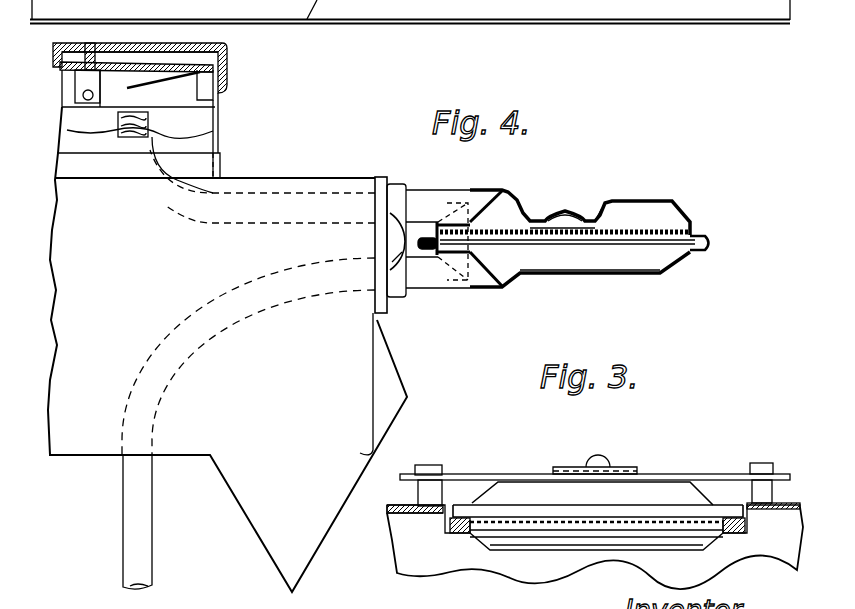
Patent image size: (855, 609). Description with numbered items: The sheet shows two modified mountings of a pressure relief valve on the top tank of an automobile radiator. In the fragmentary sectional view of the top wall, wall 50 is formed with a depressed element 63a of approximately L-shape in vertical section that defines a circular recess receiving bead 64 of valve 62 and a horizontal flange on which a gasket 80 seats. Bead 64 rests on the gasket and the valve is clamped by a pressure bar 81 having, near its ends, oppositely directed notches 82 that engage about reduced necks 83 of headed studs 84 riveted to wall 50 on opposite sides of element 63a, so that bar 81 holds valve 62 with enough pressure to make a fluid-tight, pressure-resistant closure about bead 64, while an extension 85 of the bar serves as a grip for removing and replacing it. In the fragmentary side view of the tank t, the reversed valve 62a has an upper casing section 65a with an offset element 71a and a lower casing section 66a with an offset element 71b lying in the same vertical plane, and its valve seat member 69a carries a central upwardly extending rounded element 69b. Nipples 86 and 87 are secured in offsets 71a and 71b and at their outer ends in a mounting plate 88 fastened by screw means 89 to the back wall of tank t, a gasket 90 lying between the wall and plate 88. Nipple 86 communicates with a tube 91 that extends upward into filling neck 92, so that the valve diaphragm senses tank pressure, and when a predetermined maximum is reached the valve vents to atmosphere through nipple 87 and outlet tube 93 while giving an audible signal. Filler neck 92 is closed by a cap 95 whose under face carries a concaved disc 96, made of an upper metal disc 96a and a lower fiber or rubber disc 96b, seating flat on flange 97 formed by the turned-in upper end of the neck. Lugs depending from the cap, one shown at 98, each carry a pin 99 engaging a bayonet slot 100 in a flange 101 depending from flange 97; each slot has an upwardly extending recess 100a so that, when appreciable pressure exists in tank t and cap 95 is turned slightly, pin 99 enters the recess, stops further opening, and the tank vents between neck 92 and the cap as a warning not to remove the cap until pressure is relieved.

In FIG. 4, the upper radiator tank t is at (560, 10).
In FIG. 3, the upper radiator tank t is at (407, 563).
In FIG. 3, the wall 50 is at (392, 516).
In FIG. 3, the valve 62 is at (664, 487).
In FIG. 4, the valve 62a is at (661, 201).
In FIG. 3, the depressed element 63a is at (746, 523).
In FIG. 3, the bead 64 is at (555, 513).
In FIG. 4, the upper casing section 65a is at (685, 217).
In FIG. 4, the lower casing section 66a is at (634, 276).
In FIG. 4, the valve seat member 69a is at (597, 209).
In FIG. 4, the rounded element 69b is at (563, 212).
In FIG. 4, the offset element 71a is at (489, 190).
In FIG. 4, the offset element 71b is at (502, 290).
In FIG. 3, the gasket 80 is at (460, 527).
In FIG. 3, the pressure bar 81 is at (513, 475).
In FIG. 3, the notches 82 is at (775, 472).
In FIG. 3, the reduced necks 83 is at (428, 474).
In FIG. 3, the headed studs 84 is at (433, 492).
In FIG. 3, the extension 85 is at (594, 468).
In FIG. 4, the nipple 86 is at (440, 200).
In FIG. 4, the nipple 87 is at (449, 275).
In FIG. 4, the mounting plate 88 is at (391, 186).
In FIG. 4, the screw means 89 is at (405, 285).
In FIG. 4, the gasket 90 is at (380, 240).
In FIG. 4, the tube 91 is at (300, 192).
In FIG. 4, the filling neck 92 is at (217, 120).
In FIG. 4, the outlet tube 93 is at (145, 490).
In FIG. 4, the cap 95 is at (228, 46).
In FIG. 4, the concaved disc 96 is at (143, 77).
In FIG. 4, the upper metal disc 96a is at (197, 63).
In FIG. 4, the lower disc 96b is at (70, 67).
In FIG. 4, the flange 97 is at (220, 90).
In FIG. 4, the lug 98 is at (83, 90).
In FIG. 4, the pin 99 is at (80, 107).
In FIG. 4, the bayonet slot 100 is at (132, 86).
In FIG. 4, the recess 100a is at (117, 82).
In FIG. 4, the flange 101 is at (213, 103).